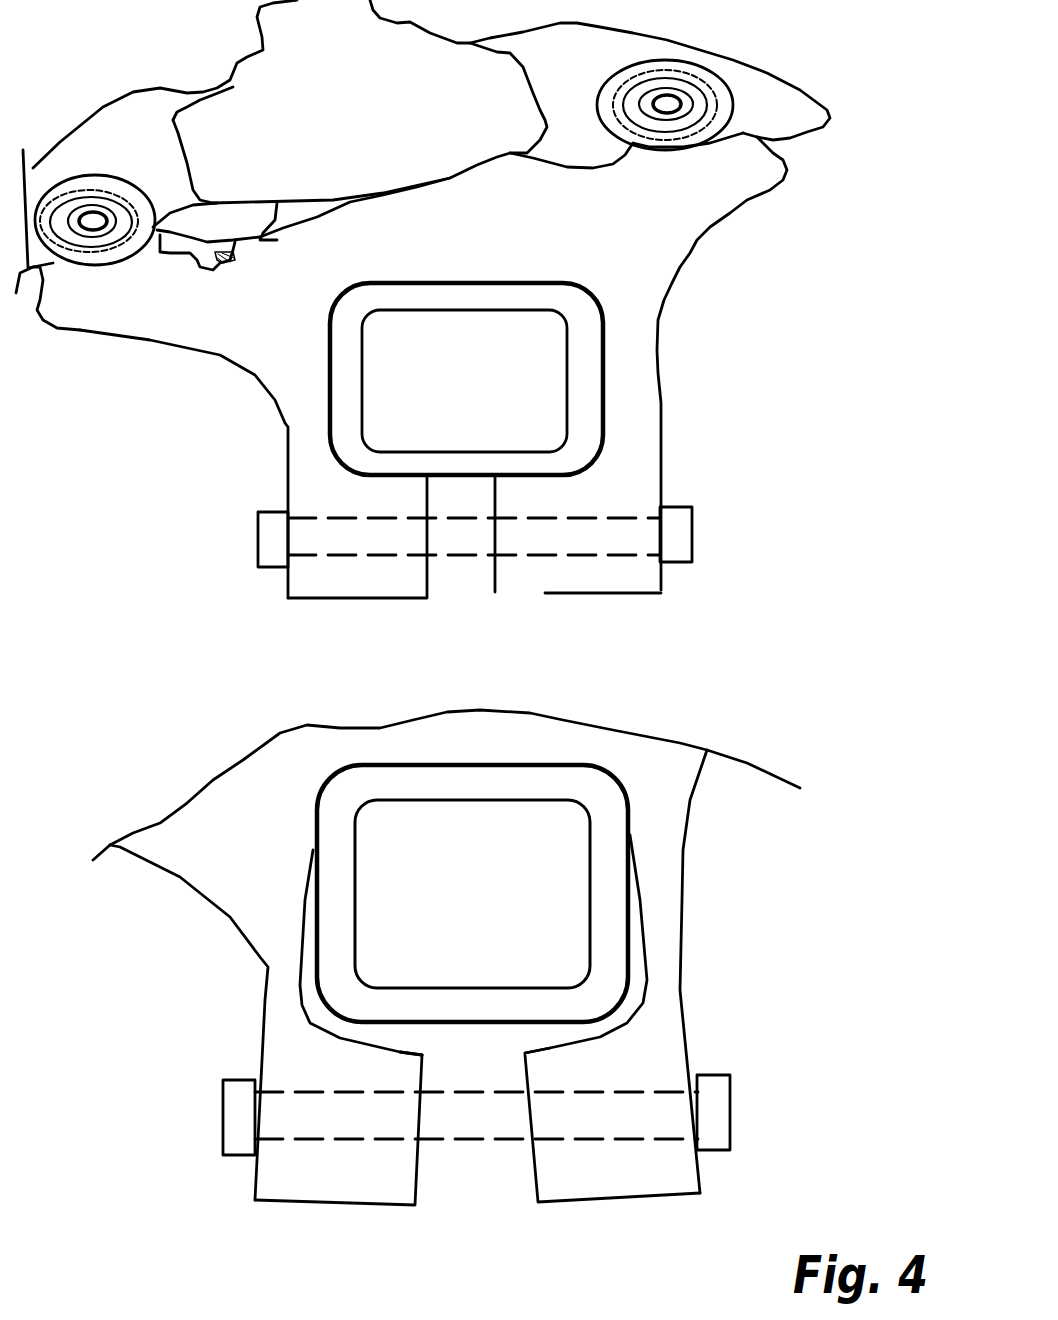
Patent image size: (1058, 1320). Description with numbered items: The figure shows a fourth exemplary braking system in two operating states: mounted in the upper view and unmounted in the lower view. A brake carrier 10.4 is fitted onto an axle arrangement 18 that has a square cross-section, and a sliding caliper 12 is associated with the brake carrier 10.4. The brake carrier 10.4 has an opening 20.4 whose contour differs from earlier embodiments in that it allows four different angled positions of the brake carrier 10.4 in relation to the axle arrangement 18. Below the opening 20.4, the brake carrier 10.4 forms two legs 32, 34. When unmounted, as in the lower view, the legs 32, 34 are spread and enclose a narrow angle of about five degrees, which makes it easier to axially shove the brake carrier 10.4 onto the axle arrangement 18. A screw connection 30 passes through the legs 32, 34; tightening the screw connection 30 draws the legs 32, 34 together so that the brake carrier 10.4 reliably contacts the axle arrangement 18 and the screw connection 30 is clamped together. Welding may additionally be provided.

The sliding caliper 12 is at (667, 33).
The brake carrier 10.4 is at (690, 253).
The axle arrangement 18 is at (603, 400).
The screw connection 30 is at (692, 535).
The leg 32 is at (353, 598).
The leg 34 is at (620, 595).
The opening 20.4 is at (458, 1057).